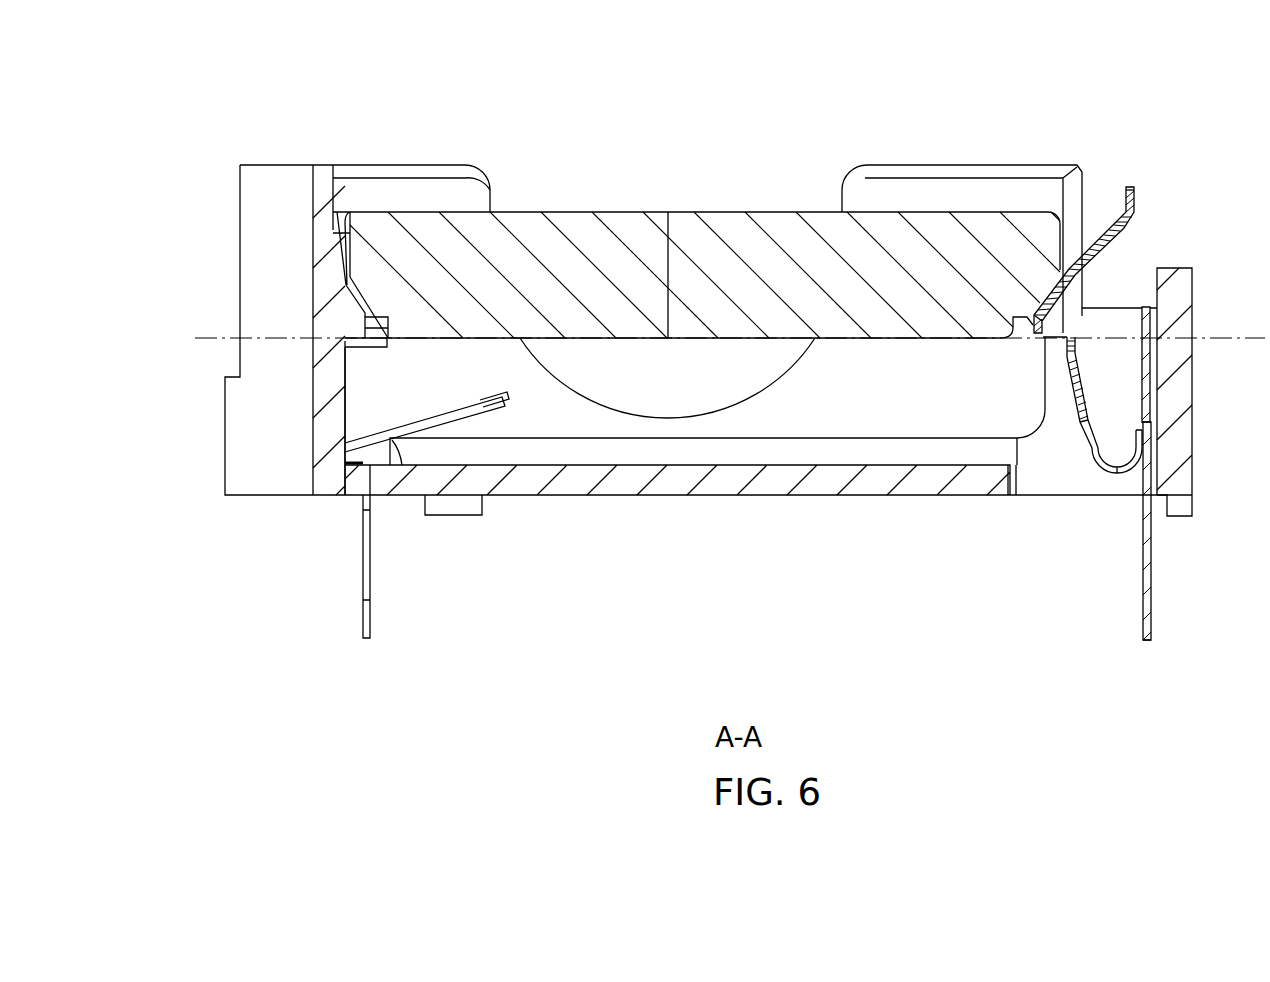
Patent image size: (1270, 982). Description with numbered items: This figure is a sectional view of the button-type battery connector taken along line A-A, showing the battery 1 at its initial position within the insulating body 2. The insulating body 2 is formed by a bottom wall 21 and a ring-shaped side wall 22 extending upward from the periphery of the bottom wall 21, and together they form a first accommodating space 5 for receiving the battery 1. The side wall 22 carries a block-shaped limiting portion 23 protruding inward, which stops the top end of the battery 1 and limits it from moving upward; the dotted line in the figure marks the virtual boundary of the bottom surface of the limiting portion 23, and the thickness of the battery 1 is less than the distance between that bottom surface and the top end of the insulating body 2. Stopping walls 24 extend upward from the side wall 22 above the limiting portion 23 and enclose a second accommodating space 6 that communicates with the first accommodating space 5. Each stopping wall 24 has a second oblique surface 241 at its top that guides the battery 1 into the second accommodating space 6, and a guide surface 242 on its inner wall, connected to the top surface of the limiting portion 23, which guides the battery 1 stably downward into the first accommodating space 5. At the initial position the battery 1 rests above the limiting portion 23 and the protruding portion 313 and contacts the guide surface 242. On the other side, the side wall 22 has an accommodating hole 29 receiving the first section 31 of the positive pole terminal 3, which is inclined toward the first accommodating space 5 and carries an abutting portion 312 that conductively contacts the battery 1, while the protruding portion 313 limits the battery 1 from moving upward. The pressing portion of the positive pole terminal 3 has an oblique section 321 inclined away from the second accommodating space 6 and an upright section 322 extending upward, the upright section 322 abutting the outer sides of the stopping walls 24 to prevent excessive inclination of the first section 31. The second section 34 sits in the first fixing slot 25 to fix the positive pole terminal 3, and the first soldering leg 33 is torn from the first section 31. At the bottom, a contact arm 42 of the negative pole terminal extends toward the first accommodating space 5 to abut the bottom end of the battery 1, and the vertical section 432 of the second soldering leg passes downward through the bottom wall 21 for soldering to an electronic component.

The battery 1 is at (672, 212).
The insulating body 2 is at (257, 165).
The positive pole terminal 3 is at (1150, 640).
The first accommodating space 5 is at (877, 403).
The second accommodating space 6 is at (343, 240).
The bottom wall 21 is at (720, 496).
The side wall 22 is at (332, 418).
The limiting portion 23 is at (358, 317).
The stopping wall 24 is at (312, 188).
The first fixing slot 25 is at (1157, 462).
The accommodating hole 29 is at (1080, 480).
The first section 31 is at (1110, 472).
The first soldering leg 33 is at (1150, 572).
The second section 34 is at (1150, 400).
The contact arm 42 is at (465, 415).
The second oblique surface 241 is at (334, 178).
The guide surface 242 is at (338, 250).
The abutting portion 312 is at (1077, 420).
The protruding portion 313 is at (1038, 300).
The oblique section 321 is at (1118, 242).
The upright section 322 is at (1135, 198).
The vertical section 432 is at (366, 560).